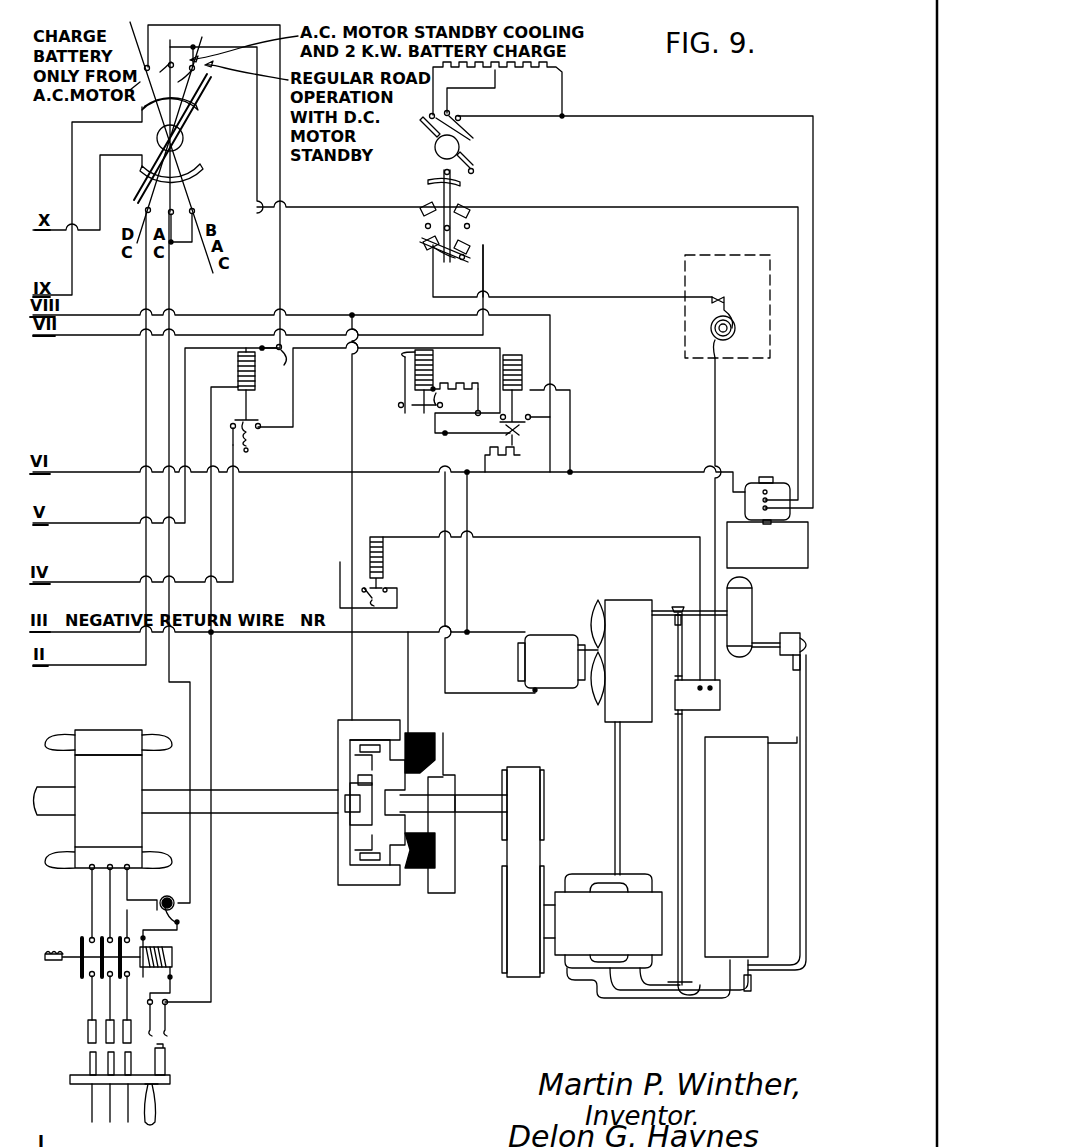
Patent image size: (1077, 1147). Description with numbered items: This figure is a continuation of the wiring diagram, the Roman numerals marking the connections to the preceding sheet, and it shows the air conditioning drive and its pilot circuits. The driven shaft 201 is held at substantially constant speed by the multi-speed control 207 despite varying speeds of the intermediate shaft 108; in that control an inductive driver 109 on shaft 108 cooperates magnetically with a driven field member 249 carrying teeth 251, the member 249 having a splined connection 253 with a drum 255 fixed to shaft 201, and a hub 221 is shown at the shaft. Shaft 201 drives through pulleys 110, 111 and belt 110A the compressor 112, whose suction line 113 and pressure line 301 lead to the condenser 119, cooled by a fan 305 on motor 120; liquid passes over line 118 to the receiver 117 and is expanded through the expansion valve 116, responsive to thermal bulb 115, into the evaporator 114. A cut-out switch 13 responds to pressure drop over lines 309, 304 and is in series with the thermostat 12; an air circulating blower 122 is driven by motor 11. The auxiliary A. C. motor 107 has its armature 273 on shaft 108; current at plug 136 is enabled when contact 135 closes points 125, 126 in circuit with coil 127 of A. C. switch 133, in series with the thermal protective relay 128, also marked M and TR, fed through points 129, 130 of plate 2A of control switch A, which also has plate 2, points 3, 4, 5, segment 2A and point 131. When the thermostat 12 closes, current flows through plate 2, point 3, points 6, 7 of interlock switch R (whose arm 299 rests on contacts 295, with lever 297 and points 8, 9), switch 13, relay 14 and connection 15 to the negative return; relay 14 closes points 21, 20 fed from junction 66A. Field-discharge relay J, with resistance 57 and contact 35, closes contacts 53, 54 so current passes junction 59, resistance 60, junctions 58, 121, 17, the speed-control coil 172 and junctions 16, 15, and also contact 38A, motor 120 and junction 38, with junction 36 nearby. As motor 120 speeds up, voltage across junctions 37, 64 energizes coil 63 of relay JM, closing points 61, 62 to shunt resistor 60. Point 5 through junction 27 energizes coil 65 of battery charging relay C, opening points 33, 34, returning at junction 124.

The plate 2 is at (199, 103).
The plate 2A is at (196, 176).
The point 3 is at (185, 69).
The switch contact 4 is at (165, 78).
The point 5 is at (148, 65).
The point 6 is at (422, 214).
The point 7 is at (430, 248).
The point 8 is at (462, 252).
The point 9 is at (470, 214).
The motor 11 is at (775, 485).
The electric thermostat 12 is at (722, 292).
The high- and low-pressure cut-out switch 13 is at (708, 700).
The relay 14 is at (378, 532).
The connection 15 is at (408, 633).
The junction 16 is at (410, 728).
The junction 17 is at (449, 769).
The point 20 is at (389, 581).
The point 21 is at (360, 581).
The junction 27 is at (274, 366).
The point 33 is at (233, 430).
The point 34 is at (259, 429).
The contact 35 is at (513, 380).
The wire 36 is at (570, 475).
The junction 37 is at (467, 475).
The junction 38 is at (467, 632).
The contact 38A is at (550, 635).
The contact 53 is at (527, 414).
The contact 54 is at (503, 414).
The field-discharge resistance 57 is at (518, 455).
The junction 58 is at (445, 435).
The junction 59 is at (478, 395).
The resistance 60 is at (452, 385).
The point 61 is at (449, 402).
The point 62 is at (398, 405).
The coil 63 is at (413, 375).
The junction 64 is at (403, 357).
The coil 65 is at (250, 386).
The junction 66A is at (345, 314).
The auxiliary A. C. motor 107 is at (107, 722).
The intermediate shaft 108 is at (268, 797).
The inductive driver 109 is at (340, 756).
The pulley 110 is at (544, 782).
The belt 110A is at (525, 852).
The pulley 111 is at (507, 906).
The compressor 112 is at (625, 928).
The suction line 113 is at (635, 998).
The evaporator 114 is at (752, 856).
The thermal bulb 115 is at (752, 985).
The expansion valve 116 is at (788, 634).
The receiver 117 is at (745, 612).
The line 118 is at (668, 610).
The condenser 119 is at (634, 707).
The motor 120 is at (540, 692).
The junction 121 is at (443, 694).
The air circulating blower 122 is at (791, 556).
The junction 124 is at (212, 635).
The point 125 is at (152, 1010).
The point 126 is at (166, 1020).
The operating coil 127 is at (172, 958).
The thermal protective relay 128 is at (172, 900).
The point 129 is at (171, 244).
The point 130 is at (195, 211).
The point 131 is at (146, 210).
The A. C. switch 133 is at (80, 942).
The contact 135 is at (166, 1062).
The plug 136 is at (80, 1053).
The speed-control coil 172 is at (424, 733).
The driven shaft 201 is at (480, 795).
The multi-speed control 207 is at (346, 716).
The hub 221 is at (355, 815).
The driven field member 249 is at (388, 738).
The teeth 251 is at (378, 740).
The splined connection 253 is at (357, 776).
The drum 255 is at (357, 788).
The armature 273 is at (113, 820).
The contacts 295 is at (450, 120).
The switch lever 297 is at (440, 196).
The arm 299 is at (427, 132).
The pressure line 301 is at (615, 812).
The line 304 is at (678, 806).
The fan 305 is at (600, 622).
The line 309 is at (678, 660).
The control switch A is at (186, 146).
The battery charging relay C is at (230, 371).
The field-discharge relay J is at (526, 360).
The second clutch relay JM is at (390, 394).
The thermal protective relay M is at (180, 948).
The switch R is at (505, 165).
The thermal protection relay TR is at (182, 910).